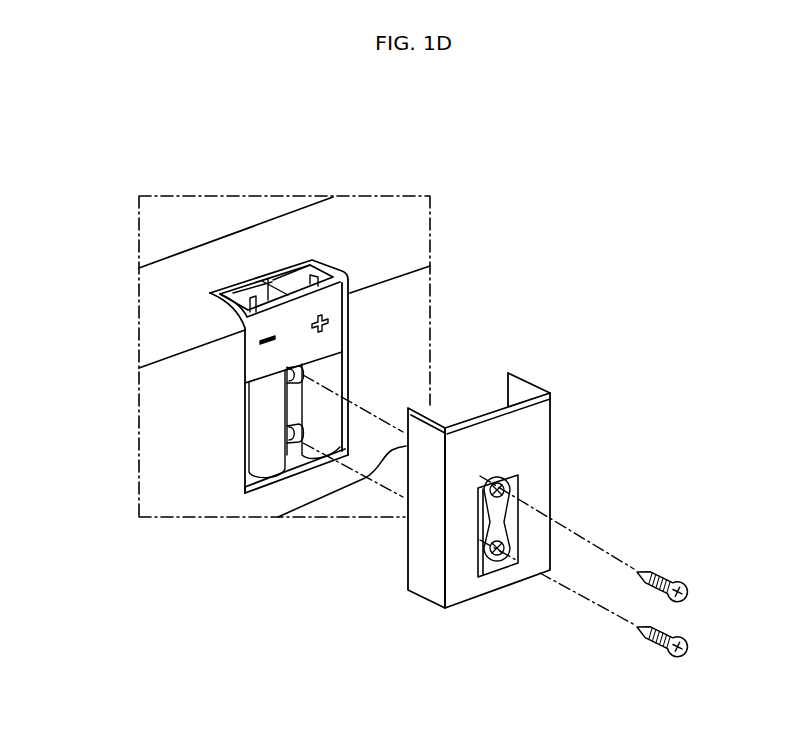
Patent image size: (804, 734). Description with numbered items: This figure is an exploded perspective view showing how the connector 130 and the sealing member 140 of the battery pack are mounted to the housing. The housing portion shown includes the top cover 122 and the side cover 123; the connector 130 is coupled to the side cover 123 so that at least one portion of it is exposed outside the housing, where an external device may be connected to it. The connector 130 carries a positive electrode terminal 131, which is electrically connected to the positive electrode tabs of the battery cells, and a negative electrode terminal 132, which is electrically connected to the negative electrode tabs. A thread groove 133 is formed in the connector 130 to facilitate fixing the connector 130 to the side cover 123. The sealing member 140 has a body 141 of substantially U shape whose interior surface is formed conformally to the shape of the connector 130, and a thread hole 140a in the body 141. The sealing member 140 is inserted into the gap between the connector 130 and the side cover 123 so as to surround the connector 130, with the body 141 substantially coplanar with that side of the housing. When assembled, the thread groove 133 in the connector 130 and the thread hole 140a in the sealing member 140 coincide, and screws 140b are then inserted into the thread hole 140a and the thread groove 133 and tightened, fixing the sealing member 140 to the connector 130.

The top cover 122 is at (148, 229).
The side cover 123 is at (418, 303).
The connector 130 is at (237, 284).
The positive electrode terminal 131 is at (311, 263).
The negative electrode terminal 132 is at (253, 293).
The thread groove 133 is at (295, 441).
The sealing member 140 is at (520, 458).
The body 141 is at (540, 417).
The thread hole 140a is at (503, 493).
The screws 140b is at (690, 584).